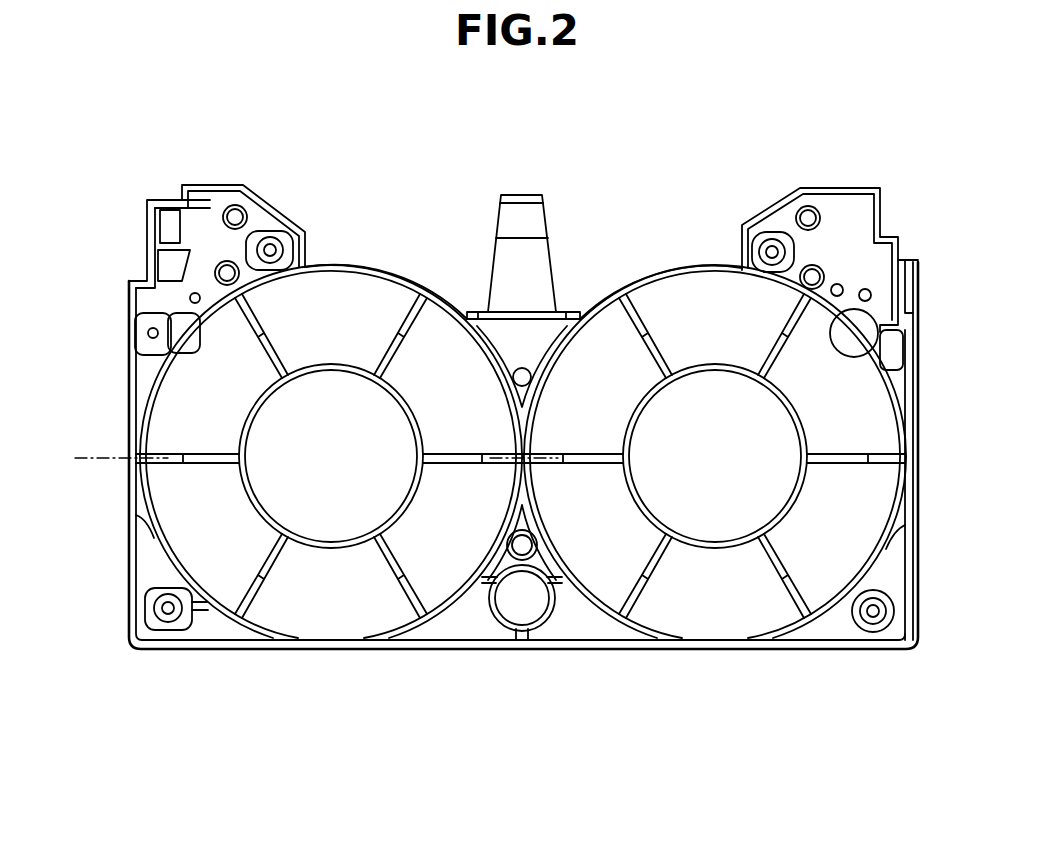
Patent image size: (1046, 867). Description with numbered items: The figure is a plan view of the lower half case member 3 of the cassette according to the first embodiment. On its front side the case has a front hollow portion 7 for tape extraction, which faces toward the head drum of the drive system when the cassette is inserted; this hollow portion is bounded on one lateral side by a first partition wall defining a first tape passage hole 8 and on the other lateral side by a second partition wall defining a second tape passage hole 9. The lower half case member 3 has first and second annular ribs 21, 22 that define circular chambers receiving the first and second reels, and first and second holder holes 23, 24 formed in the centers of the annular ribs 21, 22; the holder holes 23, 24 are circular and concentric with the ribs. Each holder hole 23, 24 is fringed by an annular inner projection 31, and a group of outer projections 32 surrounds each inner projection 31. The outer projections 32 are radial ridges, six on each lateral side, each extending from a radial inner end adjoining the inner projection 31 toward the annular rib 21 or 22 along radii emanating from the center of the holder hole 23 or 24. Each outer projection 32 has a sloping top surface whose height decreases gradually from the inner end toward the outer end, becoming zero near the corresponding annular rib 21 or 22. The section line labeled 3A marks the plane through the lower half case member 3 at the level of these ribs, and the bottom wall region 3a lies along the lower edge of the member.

The lower half case member 3 is at (187, 650).
The bottom wall of lower half 3a is at (335, 630).
The section line 3A- 3A is at (549, 467).
The front hollow portion 7 is at (330, 245).
The first tape passage hole 8 is at (268, 199).
The second tape passage hole 9 is at (788, 197).
The first annular rib 21 is at (387, 274).
The second annular rib 22 is at (670, 270).
The first holder hole 23 is at (320, 532).
The second holder hole 24 is at (707, 543).
The annular inner projection 31 is at (360, 553).
The outer projection 32 is at (448, 467).